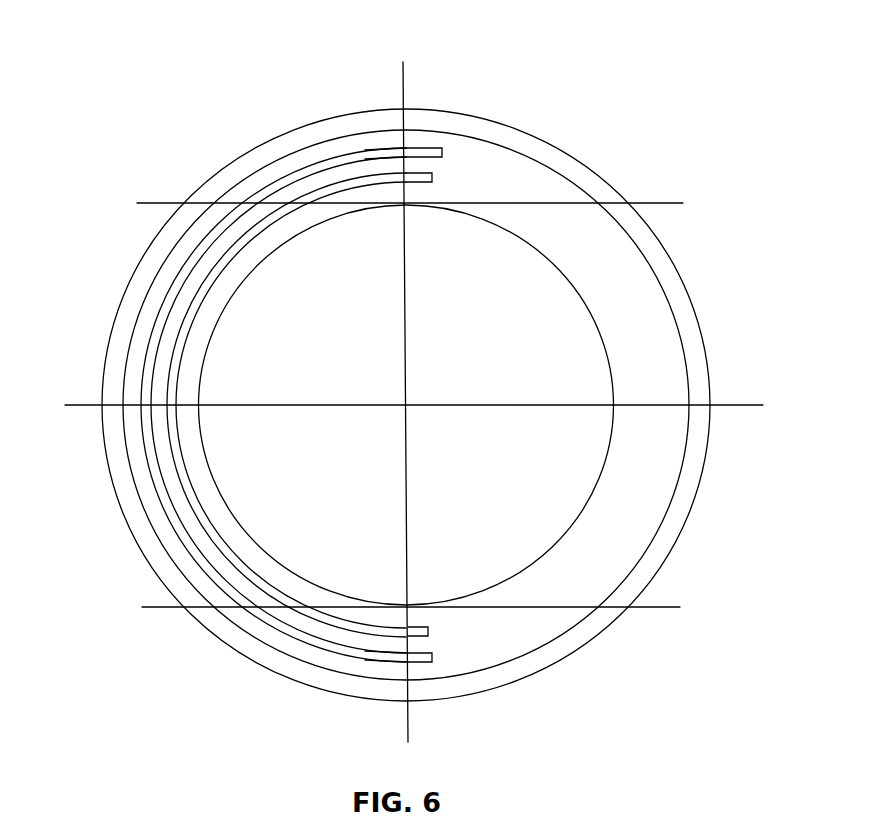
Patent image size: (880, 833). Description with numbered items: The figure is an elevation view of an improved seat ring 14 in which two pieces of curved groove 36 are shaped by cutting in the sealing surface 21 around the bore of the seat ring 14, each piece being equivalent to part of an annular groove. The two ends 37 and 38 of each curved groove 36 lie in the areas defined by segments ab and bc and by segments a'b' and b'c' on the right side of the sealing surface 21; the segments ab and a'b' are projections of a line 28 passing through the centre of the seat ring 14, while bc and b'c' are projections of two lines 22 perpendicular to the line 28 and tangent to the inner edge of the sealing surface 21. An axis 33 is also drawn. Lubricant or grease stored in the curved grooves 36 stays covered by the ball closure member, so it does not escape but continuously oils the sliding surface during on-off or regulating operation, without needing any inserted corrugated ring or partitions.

The seat ring 14 is at (717, 478).
The sealing surface 21 is at (640, 355).
The lines 22 is at (430, 409).
The line 28 is at (372, 151).
The central axis 33 is at (397, 383).
The curved groove 36 is at (217, 535).
The end of curved groove 37 is at (430, 632).
The end of curved groove 38 is at (433, 178).